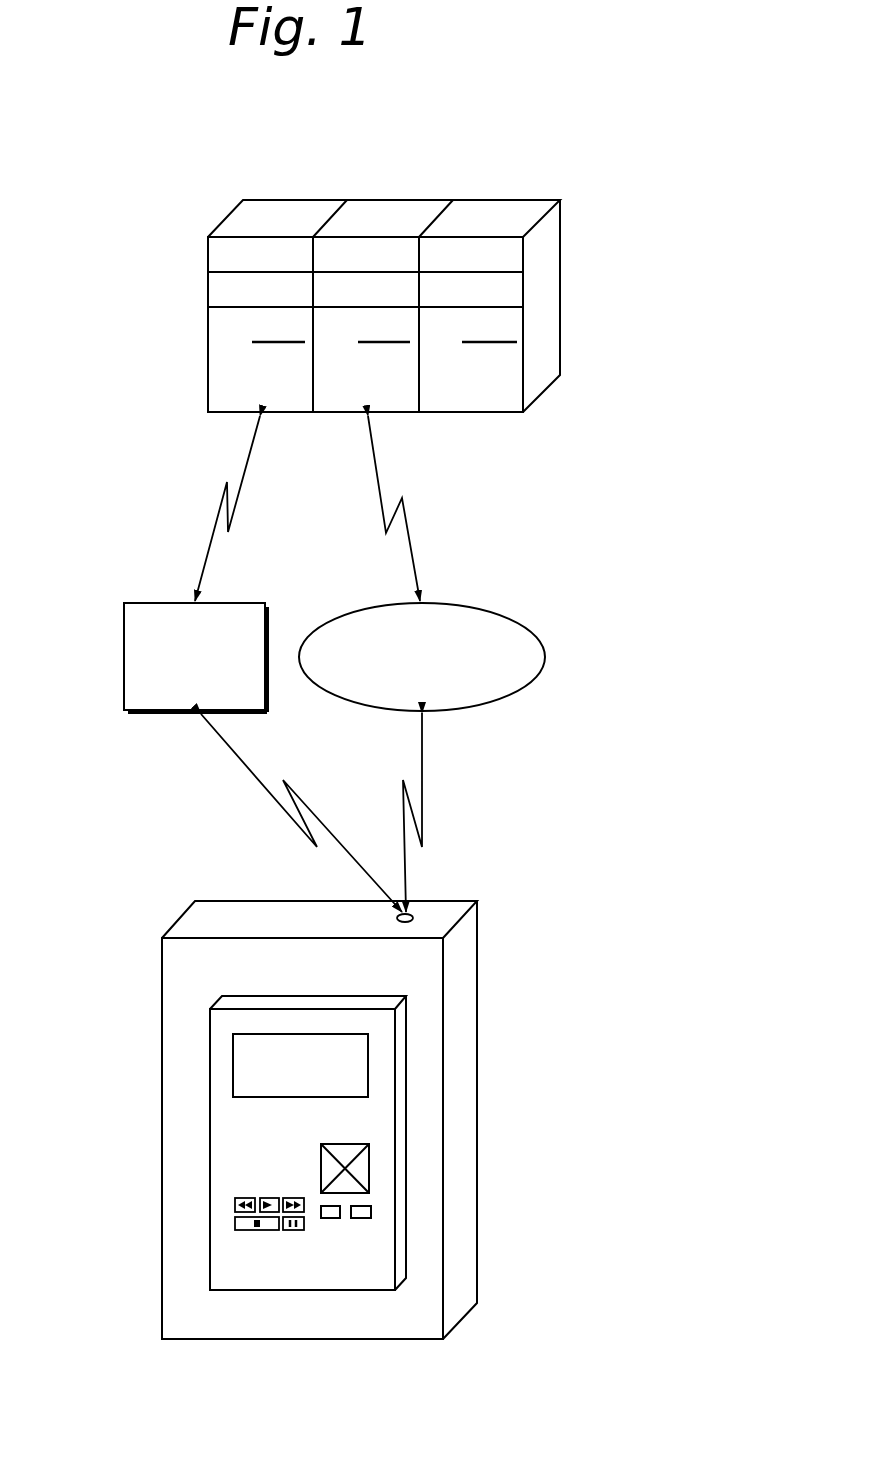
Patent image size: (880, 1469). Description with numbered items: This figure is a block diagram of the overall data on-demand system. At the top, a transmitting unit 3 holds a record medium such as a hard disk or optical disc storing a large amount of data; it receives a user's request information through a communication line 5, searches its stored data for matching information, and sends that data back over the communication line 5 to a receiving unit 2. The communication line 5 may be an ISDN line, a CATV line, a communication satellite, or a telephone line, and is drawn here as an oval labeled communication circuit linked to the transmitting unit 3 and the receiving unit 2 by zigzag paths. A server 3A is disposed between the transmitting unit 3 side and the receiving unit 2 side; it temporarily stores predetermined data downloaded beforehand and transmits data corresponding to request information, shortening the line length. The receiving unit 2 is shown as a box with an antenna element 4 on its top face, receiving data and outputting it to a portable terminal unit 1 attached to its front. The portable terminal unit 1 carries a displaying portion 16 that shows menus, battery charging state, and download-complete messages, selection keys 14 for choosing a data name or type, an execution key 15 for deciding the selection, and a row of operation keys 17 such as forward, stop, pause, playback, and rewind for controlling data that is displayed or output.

The portable terminal unit 1 is at (232, 1147).
The receiving unit 2 is at (422, 970).
The transmitting unit 3 is at (388, 177).
The server 3A is at (123, 660).
The antenna 4 is at (412, 911).
The communication line 5 is at (545, 657).
The selection keys 14 is at (369, 1165).
The execution key 15 is at (330, 1218).
The displaying portion 16 is at (337, 1058).
The operation keys 17 is at (232, 1218).